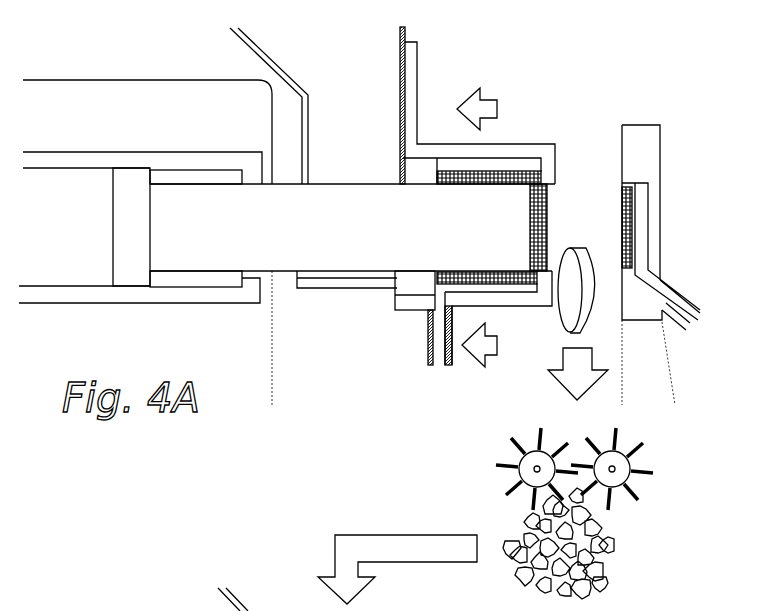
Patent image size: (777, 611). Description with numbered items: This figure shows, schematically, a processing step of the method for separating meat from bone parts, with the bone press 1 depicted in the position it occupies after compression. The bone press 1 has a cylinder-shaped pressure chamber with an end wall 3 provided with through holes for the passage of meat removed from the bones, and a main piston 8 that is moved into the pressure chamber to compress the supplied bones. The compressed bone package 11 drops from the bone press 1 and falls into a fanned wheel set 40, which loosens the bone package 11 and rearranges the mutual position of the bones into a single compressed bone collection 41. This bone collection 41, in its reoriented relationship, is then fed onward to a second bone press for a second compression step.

The bone press 1 is at (637, 53).
The end wall 3 is at (623, 198).
The main piston 8 is at (337, 257).
The compressed bone package 11 is at (582, 250).
The fanned wheel set 40 is at (671, 458).
The compressed bone collection 41 is at (612, 545).